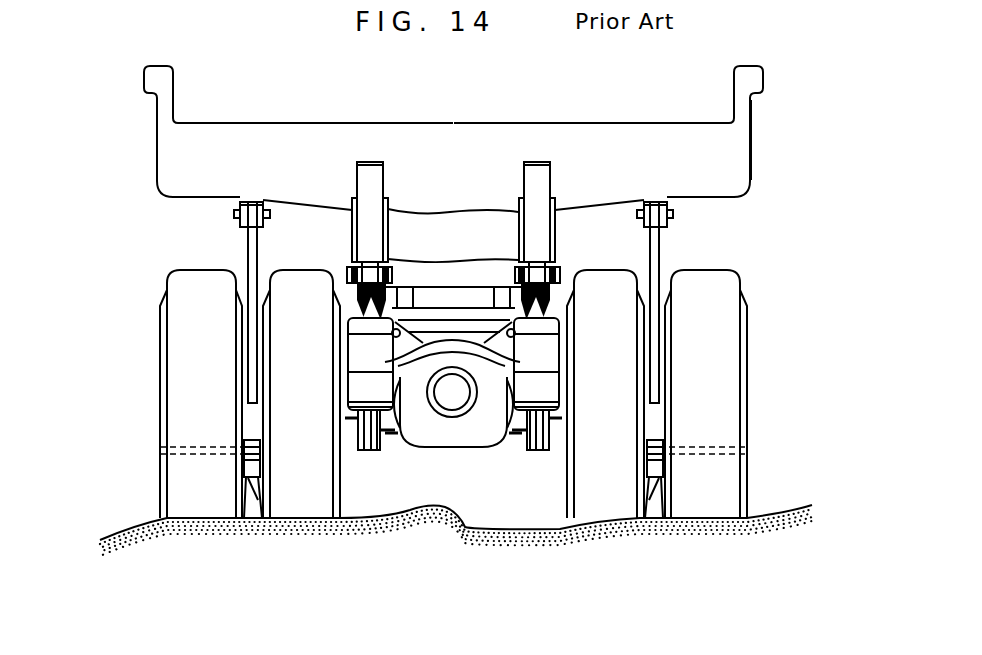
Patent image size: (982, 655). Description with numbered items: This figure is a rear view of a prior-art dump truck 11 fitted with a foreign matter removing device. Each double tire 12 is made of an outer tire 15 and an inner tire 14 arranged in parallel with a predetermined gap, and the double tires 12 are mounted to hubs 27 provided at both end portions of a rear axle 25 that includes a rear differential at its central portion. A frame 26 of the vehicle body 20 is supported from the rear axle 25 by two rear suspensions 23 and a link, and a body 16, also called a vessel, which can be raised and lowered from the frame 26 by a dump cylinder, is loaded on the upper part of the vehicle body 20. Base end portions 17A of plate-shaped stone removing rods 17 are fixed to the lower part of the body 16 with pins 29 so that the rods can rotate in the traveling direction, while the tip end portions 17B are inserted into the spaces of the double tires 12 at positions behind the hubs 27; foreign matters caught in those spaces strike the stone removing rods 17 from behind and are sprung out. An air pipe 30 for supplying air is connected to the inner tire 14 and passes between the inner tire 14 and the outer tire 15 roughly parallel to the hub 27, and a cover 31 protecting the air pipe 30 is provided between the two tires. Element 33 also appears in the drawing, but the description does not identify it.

The dump truck 11 is at (788, 110).
The double tire 12 is at (182, 585).
The inner tire 14 is at (290, 512).
The outer tire 15 is at (200, 505).
The body 16 is at (727, 170).
The stone removing rod 17 is at (247, 247).
The base end portion 17A is at (250, 203).
The tip end portion 17B is at (252, 386).
The vehicle body 20 is at (792, 286).
The rear suspension 23 is at (398, 421).
The rear axle 25 is at (455, 433).
The frame 26 is at (448, 273).
The hub 27 is at (252, 417).
The pin 29 is at (235, 213).
The air pipe 30 is at (182, 450).
The cover 31 is at (240, 482).
The pivot pin 33 is at (240, 204).